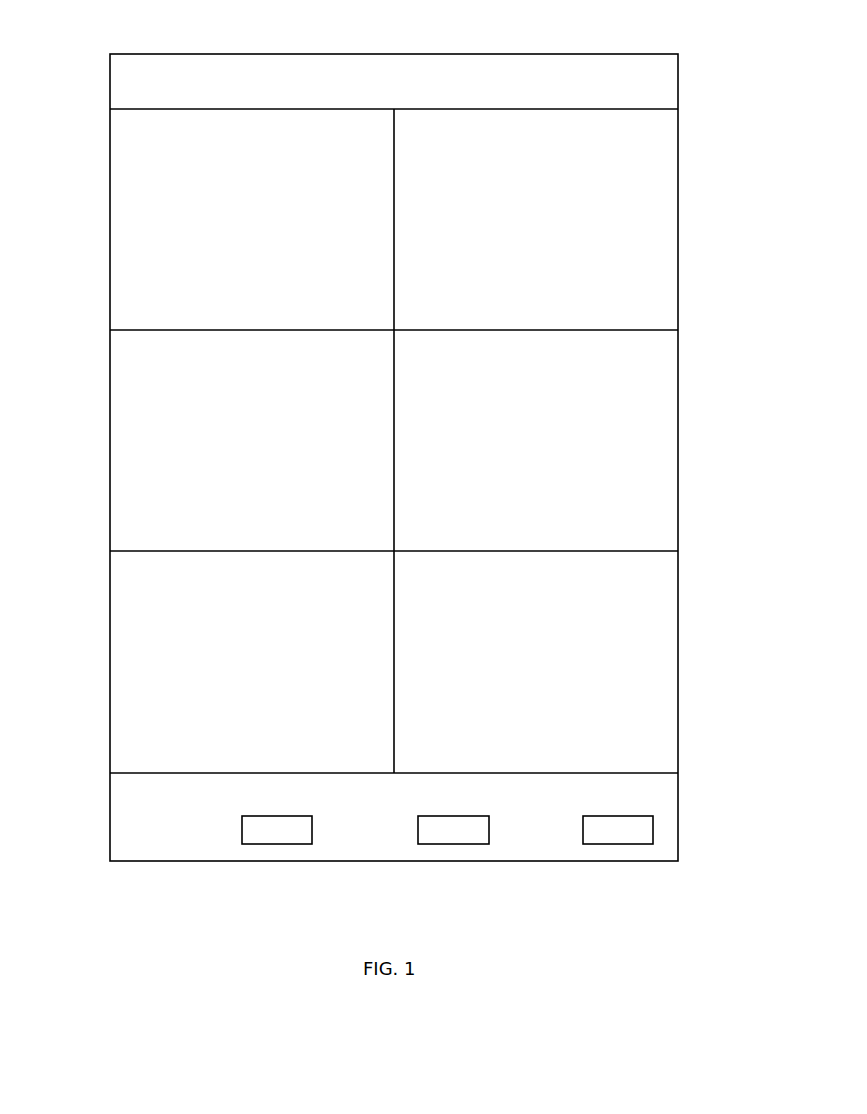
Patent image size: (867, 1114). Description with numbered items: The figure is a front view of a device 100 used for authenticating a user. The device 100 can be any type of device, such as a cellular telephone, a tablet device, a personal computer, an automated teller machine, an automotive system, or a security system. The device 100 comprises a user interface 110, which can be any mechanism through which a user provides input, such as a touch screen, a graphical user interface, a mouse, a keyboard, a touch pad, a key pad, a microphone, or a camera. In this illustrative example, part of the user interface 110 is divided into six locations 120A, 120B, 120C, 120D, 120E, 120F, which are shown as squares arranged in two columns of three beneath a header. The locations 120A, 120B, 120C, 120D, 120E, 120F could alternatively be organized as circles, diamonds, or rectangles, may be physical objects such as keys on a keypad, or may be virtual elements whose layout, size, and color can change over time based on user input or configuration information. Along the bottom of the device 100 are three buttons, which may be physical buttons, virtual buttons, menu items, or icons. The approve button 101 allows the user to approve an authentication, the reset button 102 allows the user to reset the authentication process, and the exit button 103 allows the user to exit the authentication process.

The device 100 is at (393, 53).
The user interface 110 is at (665, 98).
The location 120A is at (120, 300).
The location 120B is at (120, 510).
The location 120C is at (120, 740).
The location 120D is at (668, 295).
The location 120E is at (668, 505).
The location 120F is at (668, 740).
The approve button 101 is at (273, 815).
The reset button 102 is at (455, 813).
The exit button 103 is at (607, 813).